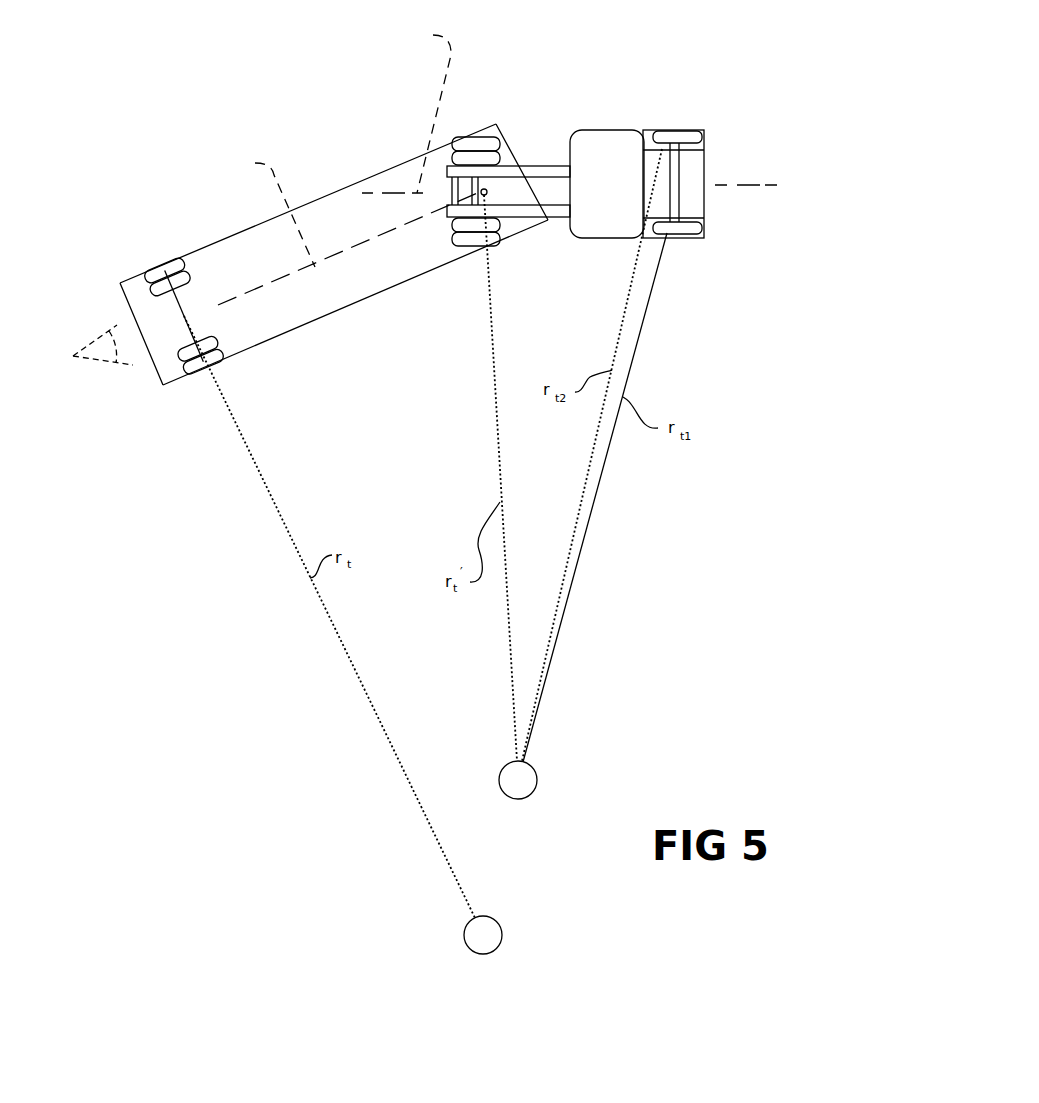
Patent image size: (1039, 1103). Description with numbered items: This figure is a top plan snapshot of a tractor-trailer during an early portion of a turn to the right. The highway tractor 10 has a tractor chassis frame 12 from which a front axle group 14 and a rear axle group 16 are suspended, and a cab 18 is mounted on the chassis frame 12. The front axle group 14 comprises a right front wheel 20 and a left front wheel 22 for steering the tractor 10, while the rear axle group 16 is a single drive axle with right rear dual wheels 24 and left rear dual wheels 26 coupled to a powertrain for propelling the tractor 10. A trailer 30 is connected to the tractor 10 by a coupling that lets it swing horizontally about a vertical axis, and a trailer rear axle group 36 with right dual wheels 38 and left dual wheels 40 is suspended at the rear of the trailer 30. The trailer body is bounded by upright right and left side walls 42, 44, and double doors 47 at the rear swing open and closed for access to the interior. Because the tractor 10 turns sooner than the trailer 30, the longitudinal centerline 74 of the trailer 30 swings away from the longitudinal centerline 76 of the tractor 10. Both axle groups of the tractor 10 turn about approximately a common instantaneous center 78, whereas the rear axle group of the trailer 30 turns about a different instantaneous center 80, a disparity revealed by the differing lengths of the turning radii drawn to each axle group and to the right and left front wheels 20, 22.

The highway tractor 10 is at (622, 128).
The tractor chassis frame 12 is at (528, 167).
The front axle group 14 is at (690, 128).
The rear axle group 16 is at (502, 248).
The cab 18 is at (598, 152).
The right front wheel 20 is at (693, 230).
The left front wheel 22 is at (675, 138).
The right rear dual wheels 24 is at (468, 250).
The left rear dual wheels 26 is at (480, 137).
The trailer 30 is at (393, 164).
The trailer rear axle group 36 is at (182, 302).
The right dual wheels 38 is at (165, 380).
The left dual wheels 40 is at (122, 302).
The right side wall 42 is at (346, 308).
The left side wall 44 is at (313, 200).
The double doors 47 is at (73, 356).
The longitudinal centerline of trailer 74 is at (268, 209).
The longitudinal centerline of tractor 76 is at (426, 109).
The common instantaneous center 78 is at (537, 778).
The instantaneous center 80 is at (502, 935).